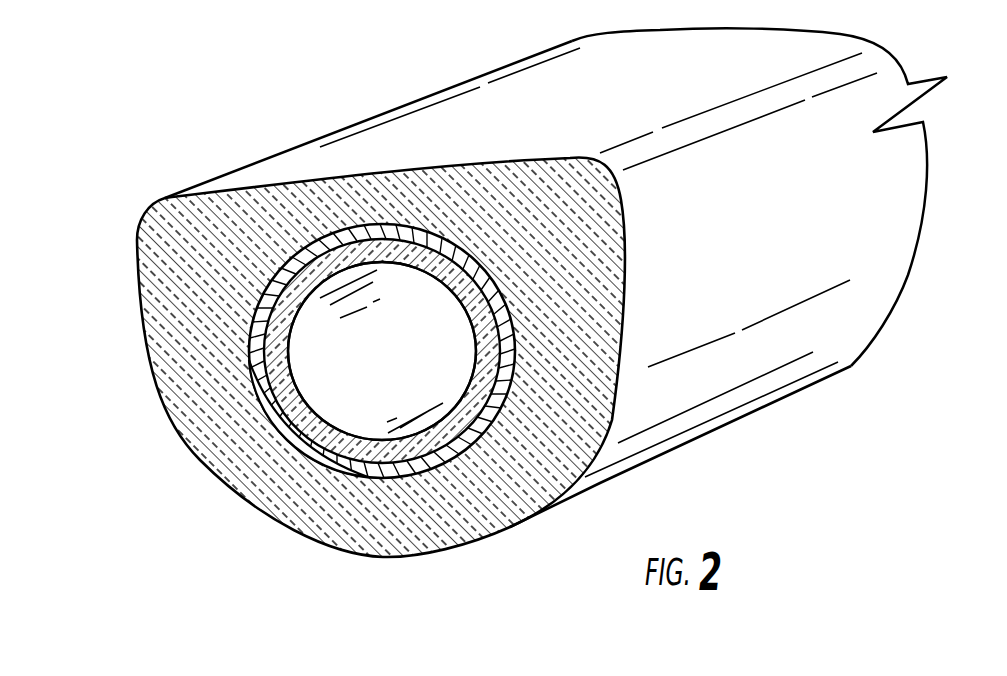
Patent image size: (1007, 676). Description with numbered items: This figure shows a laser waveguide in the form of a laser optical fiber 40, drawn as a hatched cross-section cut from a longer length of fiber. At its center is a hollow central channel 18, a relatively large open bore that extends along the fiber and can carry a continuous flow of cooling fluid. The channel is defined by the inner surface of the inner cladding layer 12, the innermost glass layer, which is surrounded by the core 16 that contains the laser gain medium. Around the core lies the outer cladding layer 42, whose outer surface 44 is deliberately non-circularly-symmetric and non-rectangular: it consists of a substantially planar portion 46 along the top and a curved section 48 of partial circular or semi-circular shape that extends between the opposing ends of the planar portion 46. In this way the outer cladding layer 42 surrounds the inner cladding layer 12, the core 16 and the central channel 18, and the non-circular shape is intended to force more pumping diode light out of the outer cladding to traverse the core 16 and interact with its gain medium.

The laser optical fiber 40 is at (101, 80).
The planar portion 46 is at (242, 161).
The outer cladding layer 42 is at (258, 467).
The outer surface 44 is at (180, 457).
The curved section 48 is at (513, 542).
The core 16 is at (435, 458).
The inner cladding layer 12 is at (400, 447).
The central channel 18 is at (368, 398).